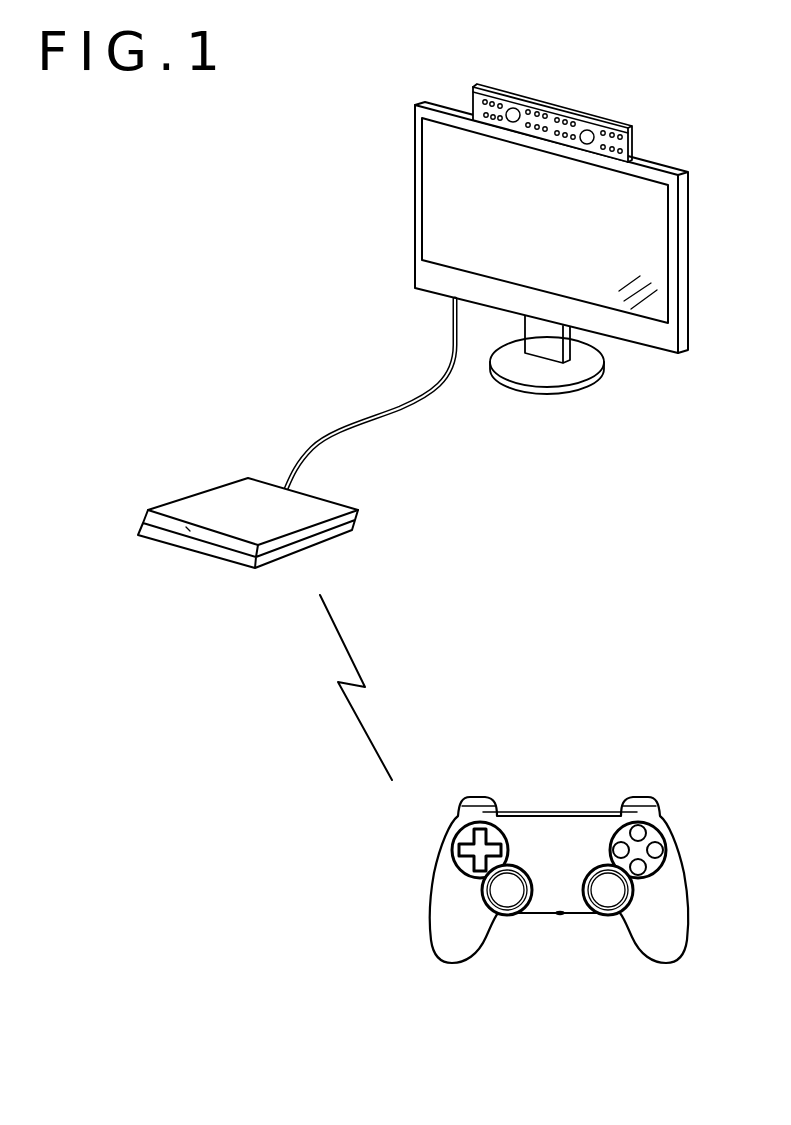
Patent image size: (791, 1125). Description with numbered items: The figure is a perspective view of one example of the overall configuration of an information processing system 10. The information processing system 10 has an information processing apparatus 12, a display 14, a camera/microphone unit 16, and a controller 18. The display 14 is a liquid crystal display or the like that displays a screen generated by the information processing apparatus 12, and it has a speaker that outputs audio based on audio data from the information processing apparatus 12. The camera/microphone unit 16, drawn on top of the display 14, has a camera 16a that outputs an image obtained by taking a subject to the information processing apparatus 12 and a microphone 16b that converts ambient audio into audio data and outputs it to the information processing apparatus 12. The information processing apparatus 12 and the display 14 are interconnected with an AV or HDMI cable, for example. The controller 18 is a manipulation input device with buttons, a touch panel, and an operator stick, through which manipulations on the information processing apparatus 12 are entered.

The information processing system 10 is at (542, 1031).
The information processing apparatus 12 is at (196, 492).
The display 14 is at (689, 259).
The camera/microphone unit 16 is at (580, 117).
The camera 16a is at (512, 122).
The microphone 16b is at (545, 99).
The controller 18 is at (690, 876).